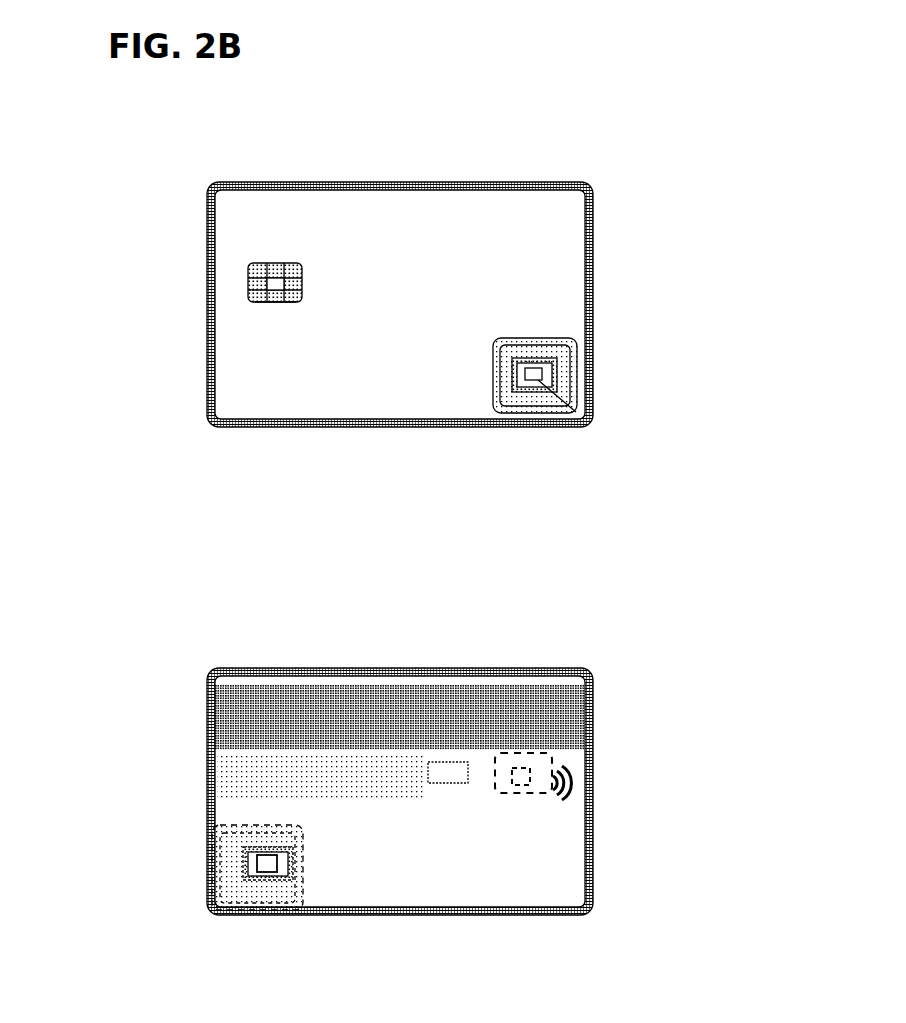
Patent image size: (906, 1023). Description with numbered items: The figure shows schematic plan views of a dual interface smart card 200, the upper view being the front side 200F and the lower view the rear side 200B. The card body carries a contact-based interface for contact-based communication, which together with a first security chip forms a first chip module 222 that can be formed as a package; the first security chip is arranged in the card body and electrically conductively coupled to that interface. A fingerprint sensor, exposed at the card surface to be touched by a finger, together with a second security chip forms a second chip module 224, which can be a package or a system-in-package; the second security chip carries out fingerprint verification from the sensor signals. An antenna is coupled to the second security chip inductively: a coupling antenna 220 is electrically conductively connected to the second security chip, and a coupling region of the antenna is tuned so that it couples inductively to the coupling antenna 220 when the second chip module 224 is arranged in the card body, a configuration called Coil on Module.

The dual interface smart card 200 is at (410, 540).
The front side of transaction card 200F is at (602, 156).
The back side of transaction card 200B is at (603, 660).
The coupling antenna 220 is at (576, 412).
The first chip module 222 is at (110, 258).
The second chip module 224 is at (717, 335).